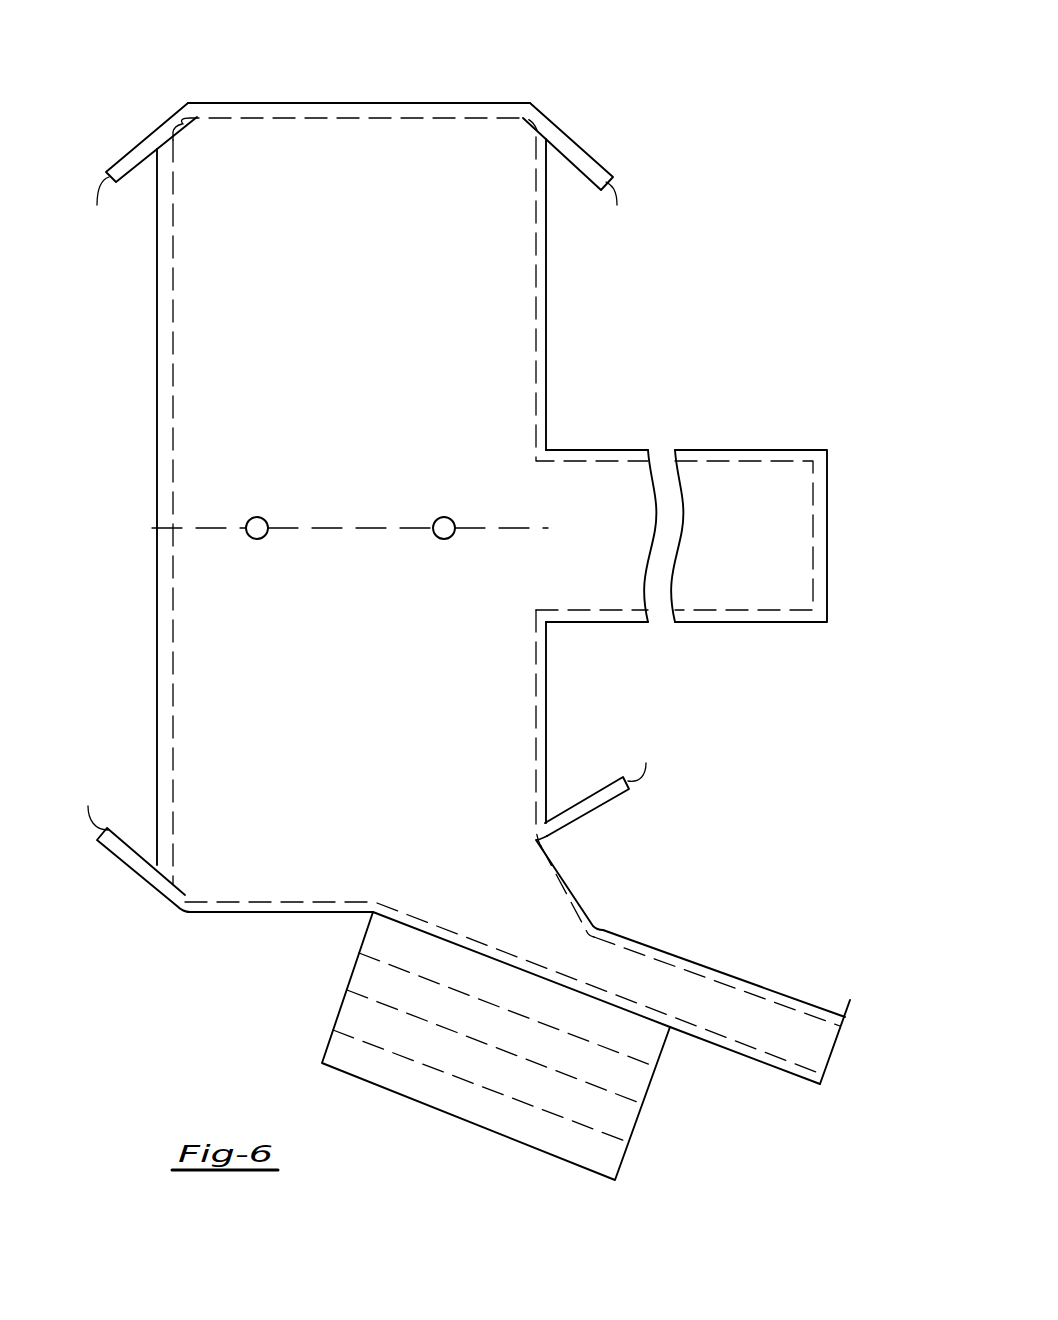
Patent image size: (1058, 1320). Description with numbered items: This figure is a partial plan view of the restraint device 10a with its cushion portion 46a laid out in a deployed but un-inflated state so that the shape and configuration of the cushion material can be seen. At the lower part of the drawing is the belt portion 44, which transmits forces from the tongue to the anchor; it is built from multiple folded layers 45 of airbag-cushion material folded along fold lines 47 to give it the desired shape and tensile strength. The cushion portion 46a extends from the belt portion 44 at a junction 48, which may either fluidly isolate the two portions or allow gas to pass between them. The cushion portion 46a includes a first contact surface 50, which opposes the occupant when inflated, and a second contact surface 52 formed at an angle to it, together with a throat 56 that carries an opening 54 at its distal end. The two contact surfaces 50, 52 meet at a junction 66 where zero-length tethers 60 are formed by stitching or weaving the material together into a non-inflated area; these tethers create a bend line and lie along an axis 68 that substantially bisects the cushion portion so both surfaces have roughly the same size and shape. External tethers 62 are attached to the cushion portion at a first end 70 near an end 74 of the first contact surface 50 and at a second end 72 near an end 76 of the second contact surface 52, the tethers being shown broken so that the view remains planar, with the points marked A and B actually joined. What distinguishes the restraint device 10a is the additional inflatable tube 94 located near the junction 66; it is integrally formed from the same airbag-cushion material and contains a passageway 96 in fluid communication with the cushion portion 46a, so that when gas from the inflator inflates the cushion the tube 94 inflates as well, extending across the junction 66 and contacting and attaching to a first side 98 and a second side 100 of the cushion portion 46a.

The restraint device 10a is at (228, 70).
The belt portion 44 is at (332, 1008).
The folded layers 45 is at (660, 1052).
The cushion portion 46a is at (152, 274).
The fold lines 47 is at (412, 973).
The junction 48 is at (660, 1020).
The first contact surface 50 is at (357, 677).
The second contact surface 52 is at (322, 278).
The opening 54 is at (810, 1015).
The throat 56 is at (808, 1012).
The zero-length tether 60 is at (257, 517).
The external tether 62 is at (128, 150).
The junction 66 is at (410, 527).
The axis 68 is at (302, 527).
The first end 70 is at (534, 836).
The second end 72 is at (166, 130).
The end 74 is at (207, 913).
The end 76 is at (475, 108).
The tube 94 is at (727, 488).
The passageway 96 is at (548, 468).
The first side 98 is at (549, 290).
The second side 100 is at (163, 387).